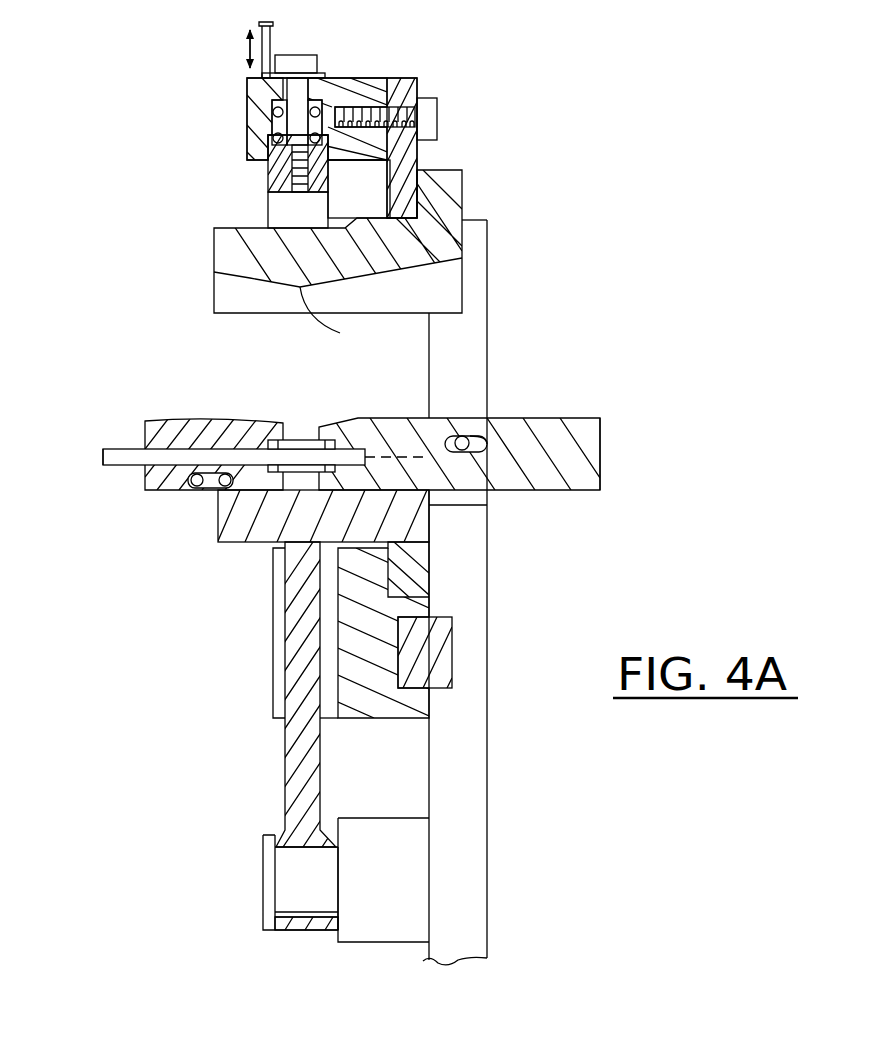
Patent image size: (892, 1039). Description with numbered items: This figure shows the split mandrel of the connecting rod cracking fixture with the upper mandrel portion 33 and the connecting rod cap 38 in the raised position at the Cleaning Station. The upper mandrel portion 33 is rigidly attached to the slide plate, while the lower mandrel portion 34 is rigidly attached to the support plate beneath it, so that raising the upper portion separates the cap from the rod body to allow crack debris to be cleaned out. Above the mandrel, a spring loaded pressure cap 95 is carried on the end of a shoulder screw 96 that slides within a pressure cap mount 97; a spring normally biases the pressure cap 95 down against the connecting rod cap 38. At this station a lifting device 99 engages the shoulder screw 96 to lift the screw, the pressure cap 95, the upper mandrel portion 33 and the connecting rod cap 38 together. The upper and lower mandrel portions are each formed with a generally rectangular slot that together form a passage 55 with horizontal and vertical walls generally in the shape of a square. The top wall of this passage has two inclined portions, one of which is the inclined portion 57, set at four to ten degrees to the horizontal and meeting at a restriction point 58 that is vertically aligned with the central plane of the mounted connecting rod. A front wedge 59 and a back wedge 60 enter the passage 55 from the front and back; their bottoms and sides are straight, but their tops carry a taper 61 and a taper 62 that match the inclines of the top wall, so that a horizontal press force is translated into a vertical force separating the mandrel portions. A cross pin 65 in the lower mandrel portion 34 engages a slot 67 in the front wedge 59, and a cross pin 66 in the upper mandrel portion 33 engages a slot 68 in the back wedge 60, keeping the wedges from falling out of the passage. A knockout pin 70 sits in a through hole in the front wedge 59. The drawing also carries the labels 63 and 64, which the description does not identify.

The upper mandrel portion 33 is at (222, 247).
The lower mandrel portion 34 is at (247, 533).
The connecting rod cap 38 is at (275, 205).
The passage 55 is at (212, 347).
The inclined portion 57 is at (250, 278).
The restriction point 58 is at (343, 320).
The front wedge 59 is at (180, 429).
The back wedge 60 is at (496, 409).
The taper 61 is at (260, 419).
The taper 62 is at (337, 425).
The pin rod 63 is at (232, 453).
The plate end 64 is at (602, 443).
The cross pin 65 is at (225, 493).
The cross pin 66 is at (457, 437).
The slot 67 is at (166, 512).
The slot 68 is at (488, 442).
The knockout pin 70 is at (113, 450).
The pressure cap 95 is at (268, 185).
The shoulder screw 96 is at (308, 63).
The pressure cap mount 97 is at (247, 105).
The lifting device 99 is at (272, 42).